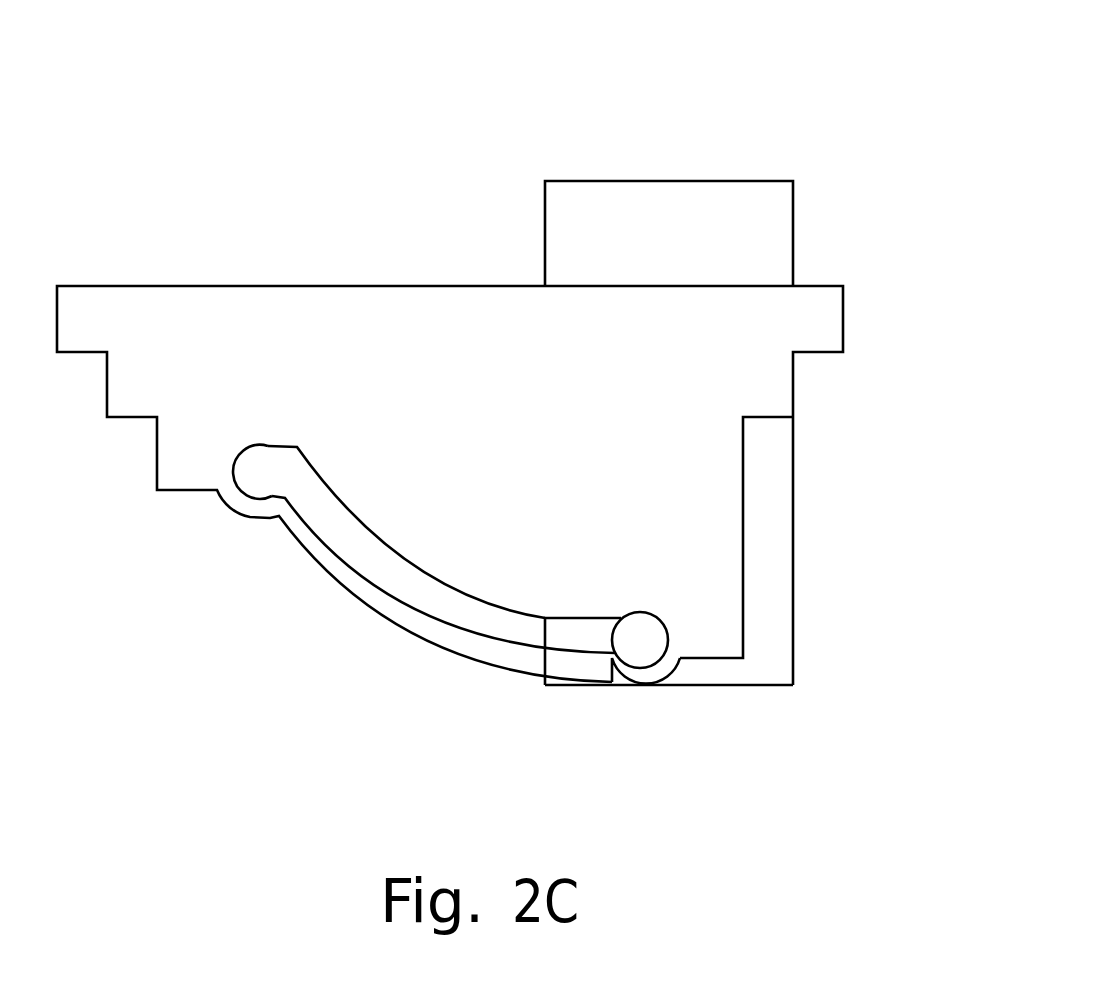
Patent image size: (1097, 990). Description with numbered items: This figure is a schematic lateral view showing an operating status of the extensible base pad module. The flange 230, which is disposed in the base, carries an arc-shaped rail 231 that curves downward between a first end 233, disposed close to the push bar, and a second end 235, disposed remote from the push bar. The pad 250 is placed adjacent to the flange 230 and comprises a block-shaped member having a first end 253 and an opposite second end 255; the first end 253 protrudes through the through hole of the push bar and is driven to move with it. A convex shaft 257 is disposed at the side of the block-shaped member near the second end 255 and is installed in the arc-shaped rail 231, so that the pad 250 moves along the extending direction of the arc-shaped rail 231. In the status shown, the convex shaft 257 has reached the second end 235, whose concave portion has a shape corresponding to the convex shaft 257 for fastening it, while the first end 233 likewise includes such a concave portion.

The flange 230 is at (756, 539).
The arc-shaped rail 231 is at (402, 575).
The first end 233 is at (255, 475).
The second end 235 is at (612, 655).
The pad 250 is at (585, 165).
The first end 253 is at (668, 181).
The second end 255 is at (770, 686).
The convex shaft 257 is at (640, 645).